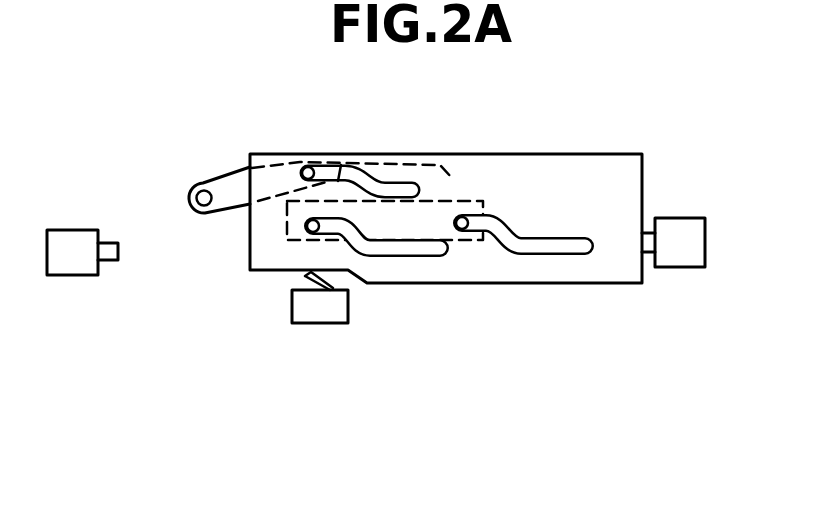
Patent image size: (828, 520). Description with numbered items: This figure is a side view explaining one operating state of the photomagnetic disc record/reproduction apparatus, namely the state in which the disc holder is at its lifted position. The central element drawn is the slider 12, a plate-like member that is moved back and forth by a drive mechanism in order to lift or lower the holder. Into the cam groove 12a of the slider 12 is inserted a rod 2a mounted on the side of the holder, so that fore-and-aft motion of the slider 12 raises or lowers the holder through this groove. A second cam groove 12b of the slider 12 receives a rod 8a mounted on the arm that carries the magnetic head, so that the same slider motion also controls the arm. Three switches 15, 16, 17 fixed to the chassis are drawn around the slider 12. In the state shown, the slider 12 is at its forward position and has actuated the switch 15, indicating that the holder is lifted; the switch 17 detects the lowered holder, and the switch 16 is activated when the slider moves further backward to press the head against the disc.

The slider 12 is at (572, 152).
The cam groove 12a is at (555, 238).
The cam groove 12b is at (355, 165).
The rod 2a is at (466, 216).
The rod 8a is at (303, 167).
The switch 15 is at (675, 217).
The switch 16 is at (70, 230).
The switch 17 is at (348, 307).